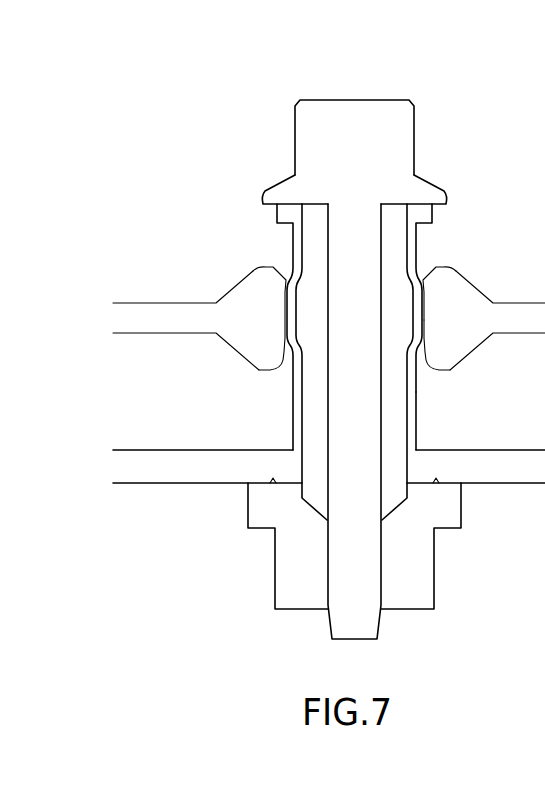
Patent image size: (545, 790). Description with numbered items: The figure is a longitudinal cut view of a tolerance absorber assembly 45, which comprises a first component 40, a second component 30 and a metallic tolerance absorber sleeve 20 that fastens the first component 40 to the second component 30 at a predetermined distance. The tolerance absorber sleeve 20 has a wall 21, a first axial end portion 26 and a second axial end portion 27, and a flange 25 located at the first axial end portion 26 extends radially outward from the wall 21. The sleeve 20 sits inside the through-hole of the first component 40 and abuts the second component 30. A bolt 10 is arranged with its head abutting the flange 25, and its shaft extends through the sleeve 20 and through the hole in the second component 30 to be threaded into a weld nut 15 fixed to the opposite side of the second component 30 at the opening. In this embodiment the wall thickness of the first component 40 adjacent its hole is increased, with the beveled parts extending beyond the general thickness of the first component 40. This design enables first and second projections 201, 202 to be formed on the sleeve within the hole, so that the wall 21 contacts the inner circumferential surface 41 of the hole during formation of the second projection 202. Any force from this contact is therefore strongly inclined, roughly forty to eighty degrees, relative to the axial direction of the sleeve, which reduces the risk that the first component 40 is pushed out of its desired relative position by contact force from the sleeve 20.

The bolt 10 is at (330, 99).
The weld nut 15 is at (276, 592).
The tolerance absorber sleeve 20 is at (283, 247).
The wall 21 is at (416, 243).
The flange 25 is at (278, 204).
The first axial end portion 26 is at (440, 203).
The second axial end portion 27 is at (417, 444).
The second component 30 is at (163, 484).
The first component 40 is at (187, 334).
The inner circumferential surface 41 is at (283, 362).
The tolerance absorber assembly 45 is at (418, 77).
The first projection 201 is at (432, 263).
The second projection 202 is at (422, 362).